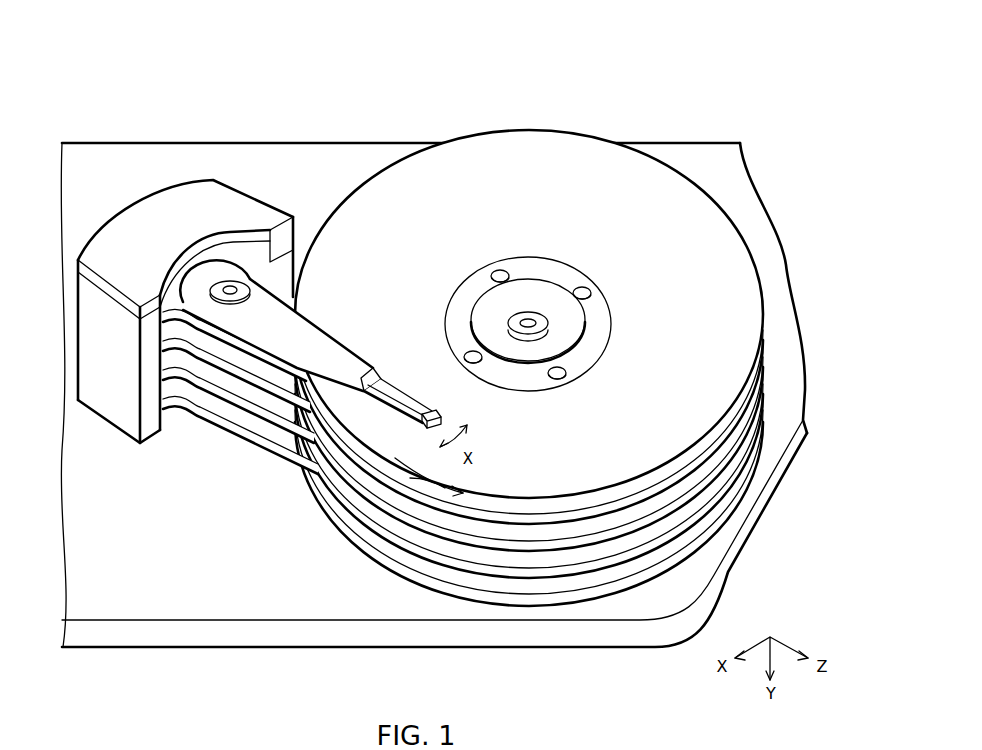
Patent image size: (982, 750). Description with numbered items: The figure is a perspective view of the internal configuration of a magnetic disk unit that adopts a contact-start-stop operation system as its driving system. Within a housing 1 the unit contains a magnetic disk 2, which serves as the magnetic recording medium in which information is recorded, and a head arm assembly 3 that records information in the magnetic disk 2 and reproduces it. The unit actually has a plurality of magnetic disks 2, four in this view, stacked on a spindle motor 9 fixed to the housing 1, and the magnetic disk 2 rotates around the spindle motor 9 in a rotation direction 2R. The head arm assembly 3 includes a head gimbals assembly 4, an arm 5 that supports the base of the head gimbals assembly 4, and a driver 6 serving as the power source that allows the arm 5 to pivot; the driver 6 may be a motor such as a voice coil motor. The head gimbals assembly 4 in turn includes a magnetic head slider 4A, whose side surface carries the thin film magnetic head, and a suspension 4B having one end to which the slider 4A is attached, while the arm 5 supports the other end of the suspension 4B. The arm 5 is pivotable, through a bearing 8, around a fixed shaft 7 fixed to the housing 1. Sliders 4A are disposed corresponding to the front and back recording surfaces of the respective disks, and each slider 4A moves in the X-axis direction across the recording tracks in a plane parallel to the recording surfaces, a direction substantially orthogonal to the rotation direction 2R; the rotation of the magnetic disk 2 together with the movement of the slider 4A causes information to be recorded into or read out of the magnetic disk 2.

The housing 1 is at (694, 158).
The magnetic disk 2 is at (707, 297).
The rotation direction 2R is at (410, 478).
The head arm assembly 3 is at (324, 237).
The head gimbals assembly 4 is at (467, 233).
The magnetic head slider 4A is at (421, 406).
The suspension 4B is at (394, 380).
The arm 5 is at (328, 347).
The driver 6 is at (185, 264).
The fixed shaft 7 is at (232, 284).
The bearing 8 is at (214, 282).
The spindle motor 9 is at (528, 334).